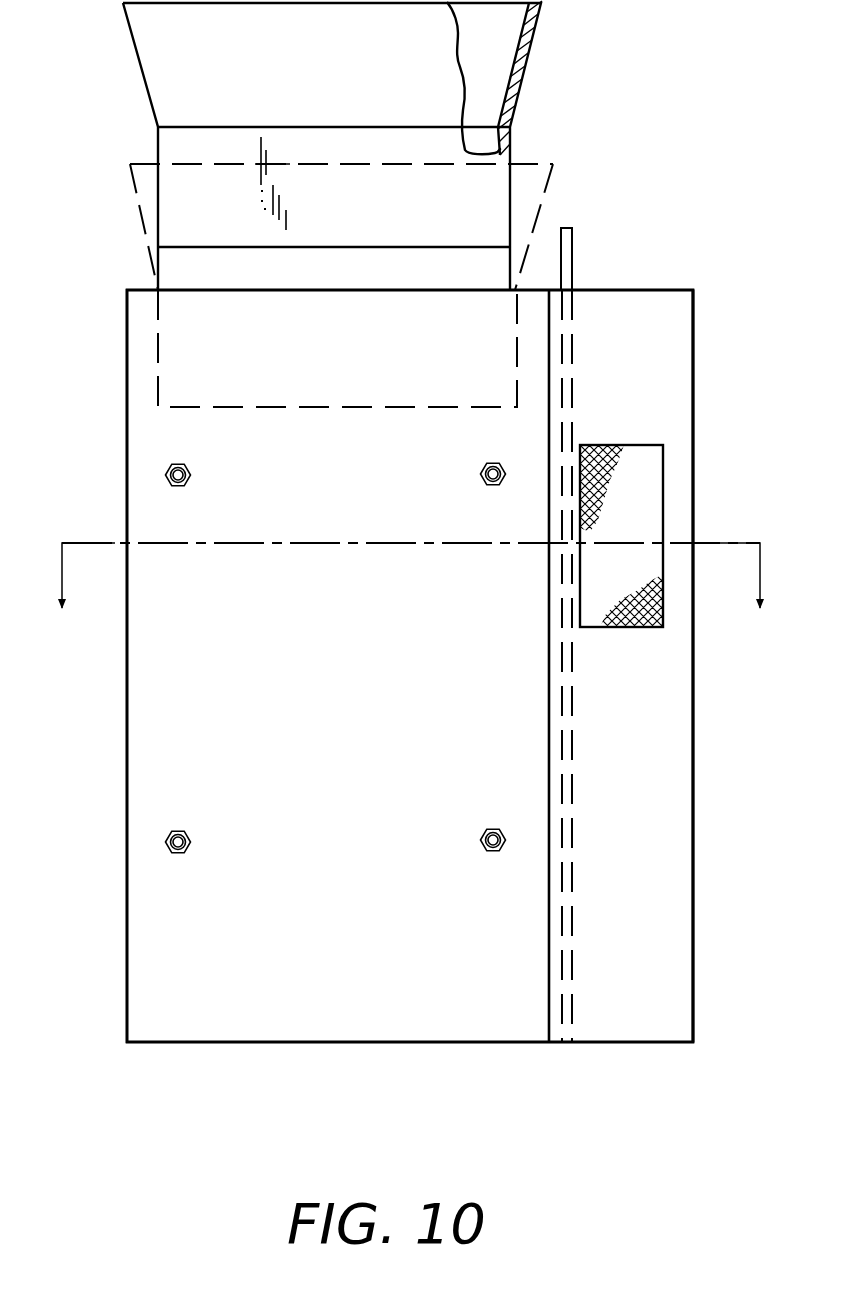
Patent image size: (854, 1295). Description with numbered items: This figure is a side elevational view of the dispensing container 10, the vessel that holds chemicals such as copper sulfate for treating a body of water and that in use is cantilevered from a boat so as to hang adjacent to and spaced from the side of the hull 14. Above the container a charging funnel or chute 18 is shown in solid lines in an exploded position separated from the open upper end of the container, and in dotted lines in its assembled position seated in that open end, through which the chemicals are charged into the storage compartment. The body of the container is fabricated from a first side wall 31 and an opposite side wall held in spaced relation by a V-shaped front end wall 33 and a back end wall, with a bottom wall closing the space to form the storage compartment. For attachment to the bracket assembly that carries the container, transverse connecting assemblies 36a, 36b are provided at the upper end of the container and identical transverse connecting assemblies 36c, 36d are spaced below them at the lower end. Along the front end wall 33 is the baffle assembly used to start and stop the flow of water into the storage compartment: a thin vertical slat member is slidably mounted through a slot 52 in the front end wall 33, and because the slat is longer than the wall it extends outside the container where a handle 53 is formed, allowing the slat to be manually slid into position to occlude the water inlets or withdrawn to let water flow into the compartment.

The dispensing container 10 is at (143, 375).
The hull 14 is at (418, 553).
The charging funnel or chute 18 is at (528, 58).
The first side wall 31 is at (157, 721).
The V-shaped front end wall 33 is at (653, 342).
The transverse connecting assembly 36a is at (187, 463).
The transverse connecting assembly 36b is at (483, 459).
The transverse connecting assembly 36c is at (187, 830).
The transverse connecting assembly 36d is at (485, 827).
The slot 52 is at (572, 338).
The handle 53 is at (572, 236).